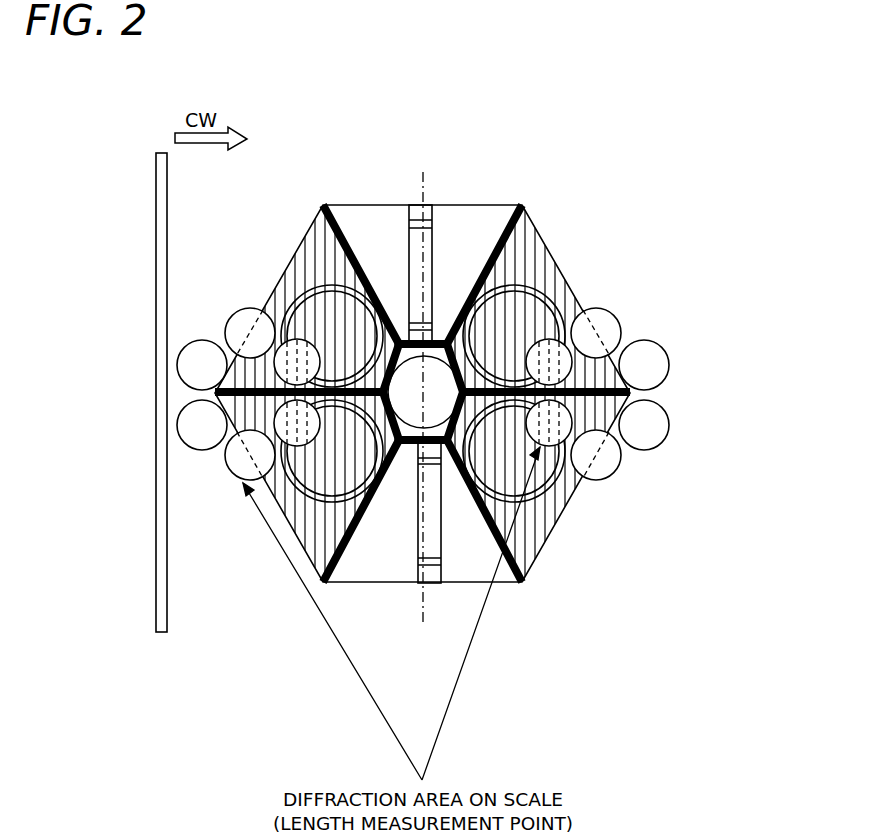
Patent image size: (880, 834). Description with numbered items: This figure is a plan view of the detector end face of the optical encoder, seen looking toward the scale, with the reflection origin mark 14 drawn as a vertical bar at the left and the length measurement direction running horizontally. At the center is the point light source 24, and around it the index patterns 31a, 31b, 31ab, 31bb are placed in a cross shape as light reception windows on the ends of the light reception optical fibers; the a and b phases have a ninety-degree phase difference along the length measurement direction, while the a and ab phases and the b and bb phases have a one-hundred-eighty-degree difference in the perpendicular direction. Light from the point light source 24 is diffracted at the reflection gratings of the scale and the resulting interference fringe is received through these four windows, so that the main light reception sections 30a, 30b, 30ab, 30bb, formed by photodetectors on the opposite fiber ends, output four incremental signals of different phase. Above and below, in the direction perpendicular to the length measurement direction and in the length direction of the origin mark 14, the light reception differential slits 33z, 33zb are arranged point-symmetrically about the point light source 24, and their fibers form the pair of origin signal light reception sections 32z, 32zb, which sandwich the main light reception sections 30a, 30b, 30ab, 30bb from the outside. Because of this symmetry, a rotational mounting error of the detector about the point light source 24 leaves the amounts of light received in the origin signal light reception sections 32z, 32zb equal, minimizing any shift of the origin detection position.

The reflection origin mark 14 is at (153, 190).
The point light source 24 is at (425, 393).
The main light reception section 30a is at (312, 290).
The main light reception section 30b is at (552, 290).
The main light reception section 30ab is at (323, 493).
The main light reception section 30bb is at (567, 507).
The index pattern 31a is at (308, 237).
The index pattern 31b is at (620, 337).
The index pattern 31ab is at (308, 555).
The index pattern 31bb is at (572, 494).
The origin signal light reception section 32z is at (417, 205).
The origin signal light reception section 32zb is at (432, 548).
The light reception differential slit 33z is at (470, 203).
The light reception differential slit 33zb is at (394, 588).